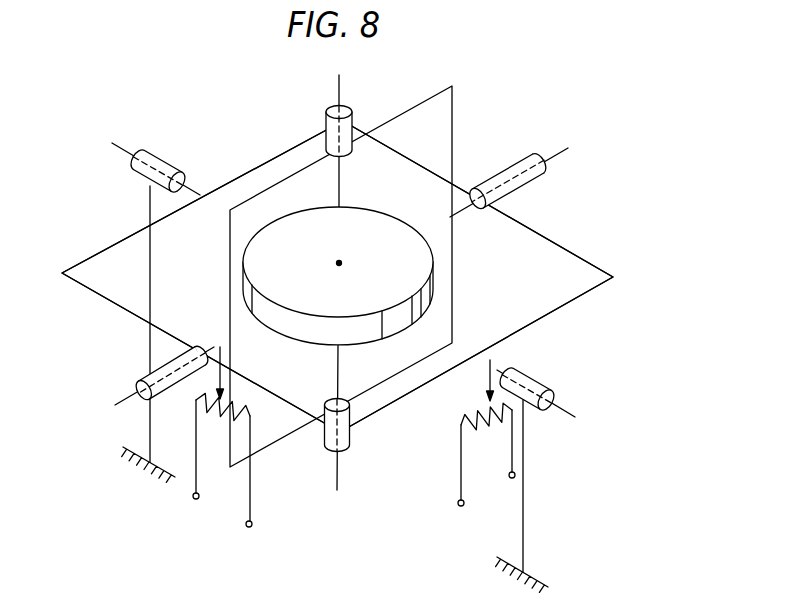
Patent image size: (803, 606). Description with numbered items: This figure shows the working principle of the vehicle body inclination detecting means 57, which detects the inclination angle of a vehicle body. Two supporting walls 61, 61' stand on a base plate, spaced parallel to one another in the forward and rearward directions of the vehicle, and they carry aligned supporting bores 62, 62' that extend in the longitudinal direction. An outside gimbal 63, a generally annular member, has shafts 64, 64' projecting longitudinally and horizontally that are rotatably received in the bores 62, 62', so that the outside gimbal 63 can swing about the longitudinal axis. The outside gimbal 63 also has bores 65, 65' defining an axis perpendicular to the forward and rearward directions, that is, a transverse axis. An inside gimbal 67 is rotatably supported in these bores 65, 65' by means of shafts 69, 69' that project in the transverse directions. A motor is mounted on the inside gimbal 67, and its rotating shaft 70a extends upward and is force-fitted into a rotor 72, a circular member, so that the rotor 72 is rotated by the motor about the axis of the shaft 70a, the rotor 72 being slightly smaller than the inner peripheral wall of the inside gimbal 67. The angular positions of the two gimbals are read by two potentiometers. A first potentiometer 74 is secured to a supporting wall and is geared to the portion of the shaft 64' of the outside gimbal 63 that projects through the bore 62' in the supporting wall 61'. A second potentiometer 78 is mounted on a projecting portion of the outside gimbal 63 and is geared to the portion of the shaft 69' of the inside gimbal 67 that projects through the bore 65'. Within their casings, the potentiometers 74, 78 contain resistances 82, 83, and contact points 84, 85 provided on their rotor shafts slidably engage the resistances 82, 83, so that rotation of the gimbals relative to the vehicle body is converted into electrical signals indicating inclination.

The vehicle body inclination detecting means 57 is at (630, 234).
The supporting wall 61 is at (121, 334).
The supporting wall 61' is at (546, 496).
The supporting bore 62 is at (163, 149).
The supporting bore 62' is at (560, 389).
The outside gimbal 63 is at (605, 282).
The shaft 64 is at (177, 165).
The shaft 64' is at (537, 375).
The bore 65 is at (141, 372).
The bore 65' is at (505, 211).
The inside gimbal 67 is at (453, 115).
The shaft 69 is at (138, 377).
The shaft 69' is at (538, 182).
The rotating shaft 70a is at (340, 181).
The rotor 72 is at (430, 274).
The first potentiometer 74 is at (480, 412).
The second potentiometer 78 is at (240, 405).
The resistance 82 is at (490, 433).
The resistance 83 is at (218, 418).
The contact point 84 is at (488, 383).
The contact point 85 is at (238, 375).